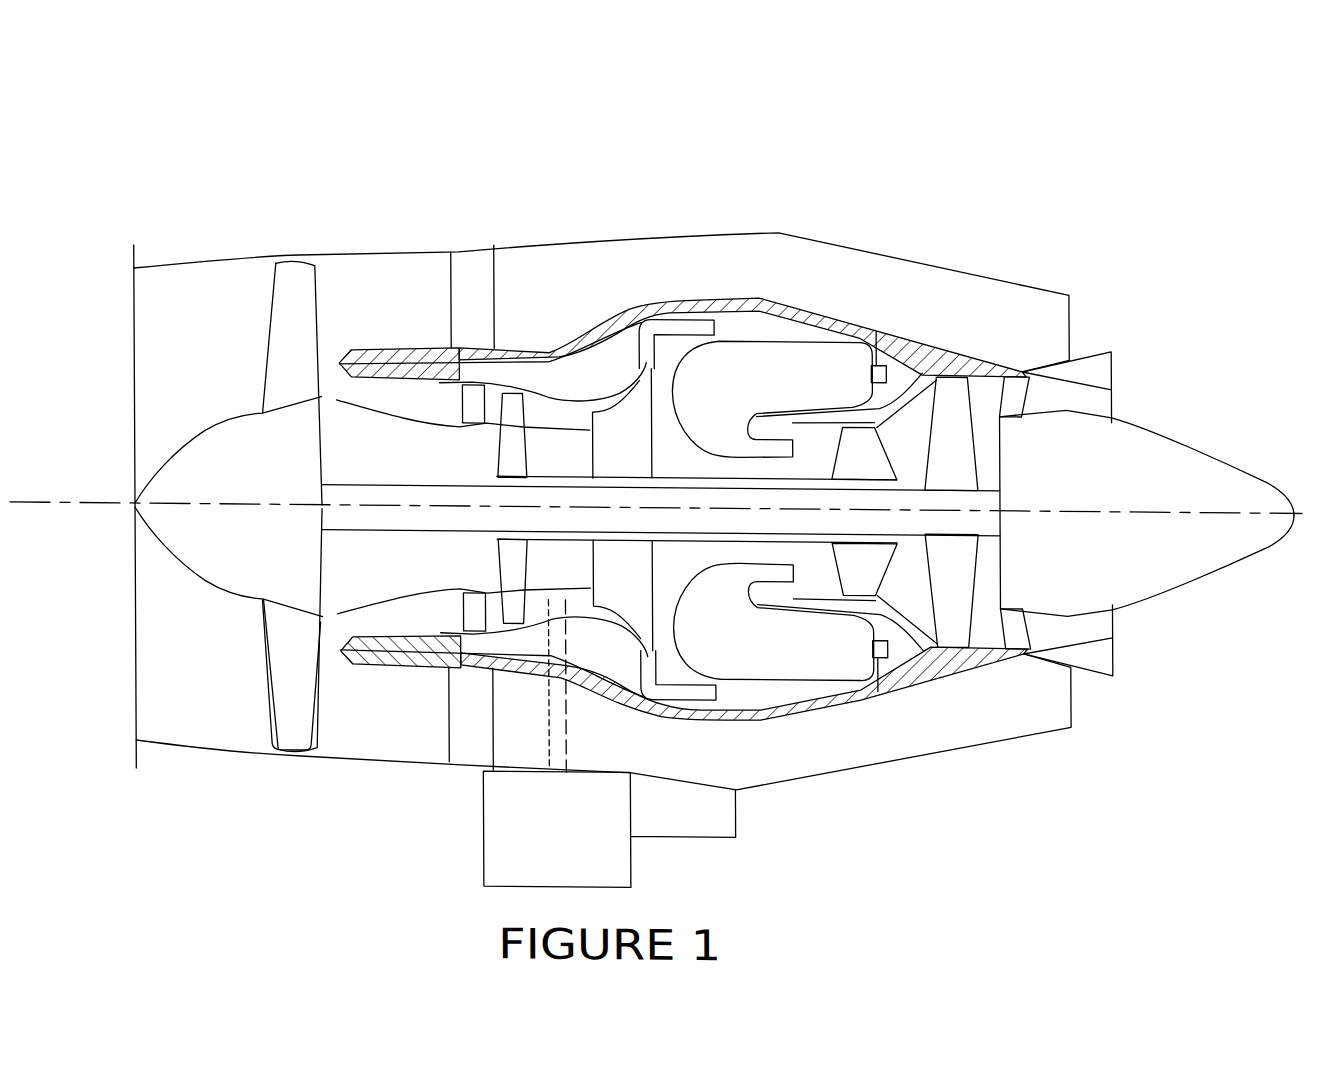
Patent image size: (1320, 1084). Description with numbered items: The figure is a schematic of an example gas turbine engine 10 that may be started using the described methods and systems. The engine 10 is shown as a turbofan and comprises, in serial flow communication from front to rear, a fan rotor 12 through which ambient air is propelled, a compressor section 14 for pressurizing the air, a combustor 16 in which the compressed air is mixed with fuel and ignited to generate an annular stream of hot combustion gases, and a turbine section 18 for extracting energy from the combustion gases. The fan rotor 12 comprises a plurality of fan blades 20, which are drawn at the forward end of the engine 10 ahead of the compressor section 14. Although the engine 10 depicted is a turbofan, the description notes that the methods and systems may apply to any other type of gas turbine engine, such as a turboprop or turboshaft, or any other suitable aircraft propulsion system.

The gas turbine engine 10 is at (931, 176).
The fan rotor 12 is at (286, 349).
The compressor section 14 is at (552, 399).
The combustor 16 is at (773, 359).
The turbine section 18 is at (907, 576).
The fan blades 20 is at (285, 664).